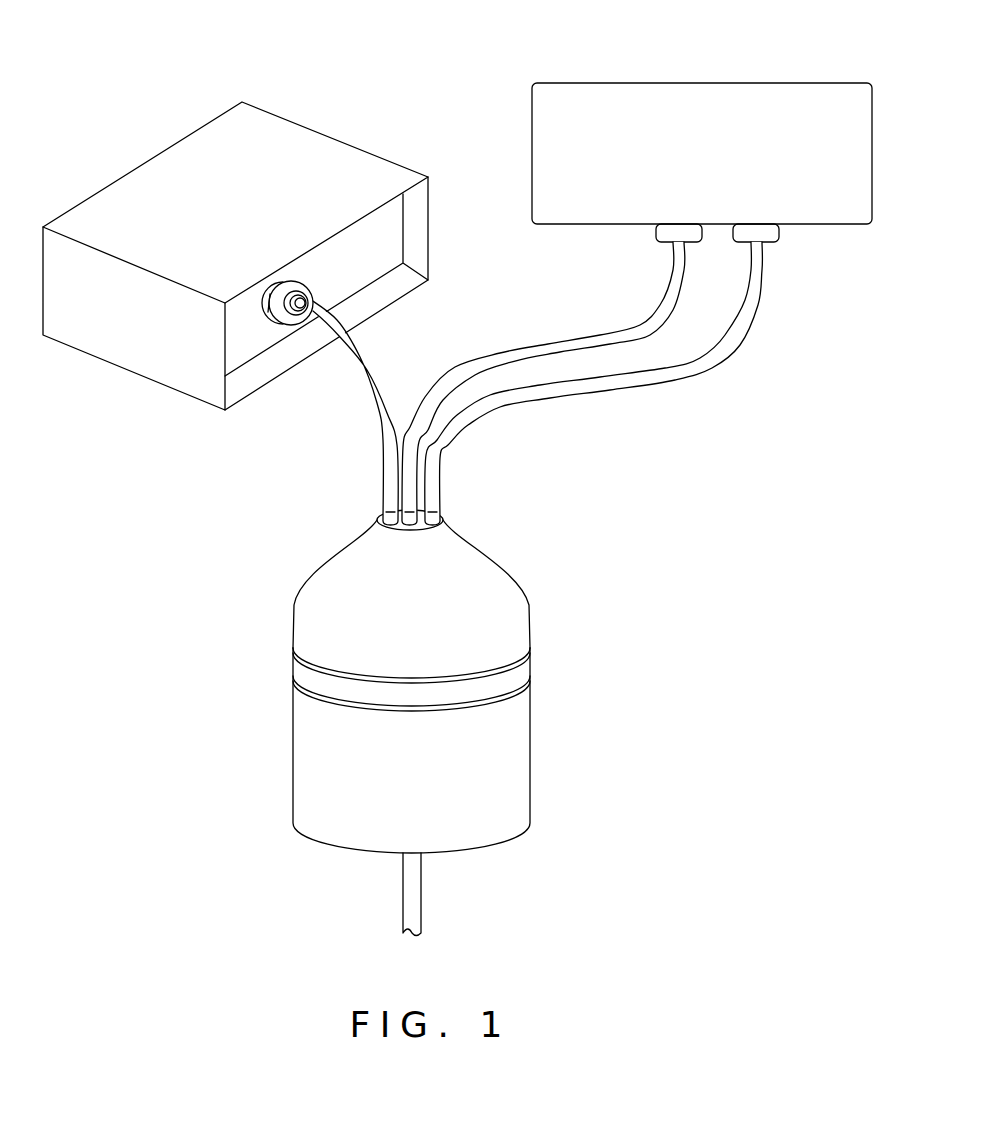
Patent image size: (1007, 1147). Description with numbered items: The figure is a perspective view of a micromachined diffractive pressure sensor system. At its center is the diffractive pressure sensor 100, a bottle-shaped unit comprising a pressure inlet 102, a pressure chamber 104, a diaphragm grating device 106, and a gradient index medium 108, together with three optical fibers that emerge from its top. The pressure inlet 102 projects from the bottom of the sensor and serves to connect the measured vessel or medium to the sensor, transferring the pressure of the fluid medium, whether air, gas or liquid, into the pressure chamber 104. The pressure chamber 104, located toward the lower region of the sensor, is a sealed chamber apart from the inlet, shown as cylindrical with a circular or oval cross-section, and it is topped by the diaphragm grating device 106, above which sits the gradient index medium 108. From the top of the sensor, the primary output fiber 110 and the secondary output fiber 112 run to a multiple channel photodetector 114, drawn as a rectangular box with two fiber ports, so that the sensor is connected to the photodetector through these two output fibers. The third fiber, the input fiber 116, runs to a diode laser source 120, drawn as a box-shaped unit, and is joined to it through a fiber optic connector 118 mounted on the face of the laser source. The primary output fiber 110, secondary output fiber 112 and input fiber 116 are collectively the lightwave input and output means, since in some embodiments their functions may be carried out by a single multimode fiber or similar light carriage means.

The diffractive pressure sensor 100 is at (588, 895).
The pressure inlet 102 is at (410, 893).
The pressure chamber 104 is at (512, 748).
The diaphragm grating device 106 is at (520, 668).
The gradient index medium 108 is at (503, 597).
The primary output fiber 110 is at (550, 343).
The secondary output fiber 112 is at (433, 467).
The multiple channel photodetector 114 is at (818, 220).
The input fiber 116 is at (388, 490).
The fiber optic connector 118 is at (293, 323).
The diode laser source 120 is at (137, 343).